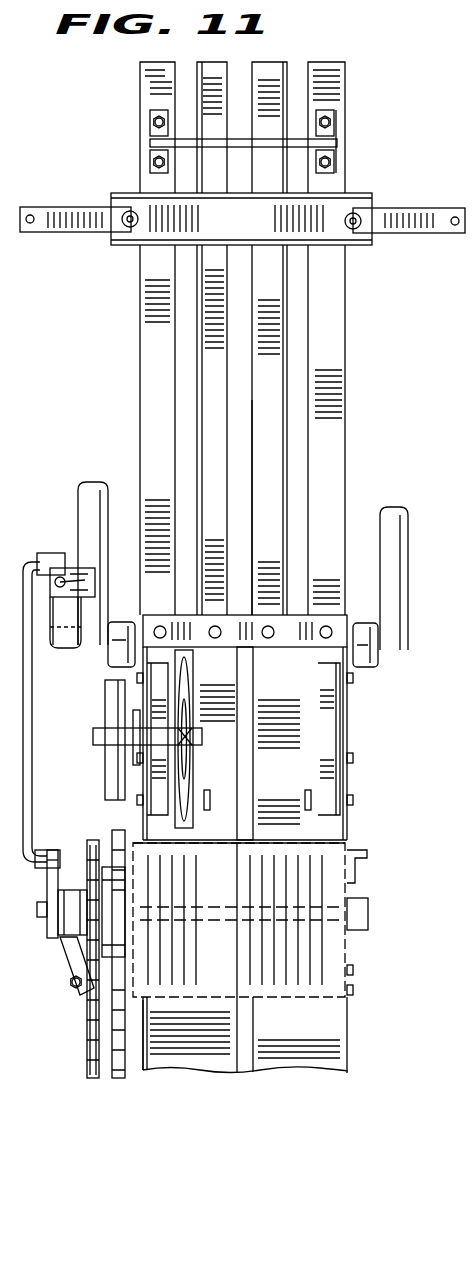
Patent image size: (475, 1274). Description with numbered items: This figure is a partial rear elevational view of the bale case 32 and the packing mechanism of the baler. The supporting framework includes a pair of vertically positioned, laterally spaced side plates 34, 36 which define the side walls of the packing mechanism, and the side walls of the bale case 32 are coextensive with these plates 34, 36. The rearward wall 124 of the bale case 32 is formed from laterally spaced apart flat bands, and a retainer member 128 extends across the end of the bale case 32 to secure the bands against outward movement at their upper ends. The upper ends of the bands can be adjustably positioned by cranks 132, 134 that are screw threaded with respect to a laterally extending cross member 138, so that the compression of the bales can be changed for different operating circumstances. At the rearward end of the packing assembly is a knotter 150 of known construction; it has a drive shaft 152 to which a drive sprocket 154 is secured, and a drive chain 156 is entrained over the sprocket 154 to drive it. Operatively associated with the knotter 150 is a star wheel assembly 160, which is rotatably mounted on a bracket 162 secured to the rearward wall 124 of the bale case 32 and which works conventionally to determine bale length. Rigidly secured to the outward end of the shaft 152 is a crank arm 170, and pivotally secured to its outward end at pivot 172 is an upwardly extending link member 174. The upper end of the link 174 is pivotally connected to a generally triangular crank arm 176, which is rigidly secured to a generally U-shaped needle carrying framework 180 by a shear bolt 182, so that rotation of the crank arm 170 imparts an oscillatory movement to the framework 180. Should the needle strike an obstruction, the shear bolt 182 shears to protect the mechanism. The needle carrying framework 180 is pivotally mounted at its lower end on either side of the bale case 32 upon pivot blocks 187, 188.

The bale case 32 is at (367, 377).
The side plate 34 is at (140, 1058).
The side plate 36 is at (348, 1058).
The rearward wall 124 is at (298, 505).
The retainer member 128 is at (150, 143).
The crank 132 is at (74, 206).
The crank 134 is at (435, 233).
The cross member 138 is at (142, 247).
The knotter 150 is at (300, 995).
The drive shaft 152 is at (322, 925).
The drive sprocket 154 is at (140, 855).
The drive chain 156 is at (86, 1050).
The star wheel assembly 160 is at (190, 772).
The bracket 162 is at (135, 718).
The crank arm 170 is at (42, 893).
The pivot 172 is at (77, 830).
The link member 174 is at (30, 824).
The crank arm 176 is at (42, 652).
The needle carrying framework 180 is at (78, 490).
The shear bolt 182 is at (62, 568).
The pivot block 187 is at (118, 650).
The pivot block 188 is at (368, 662).